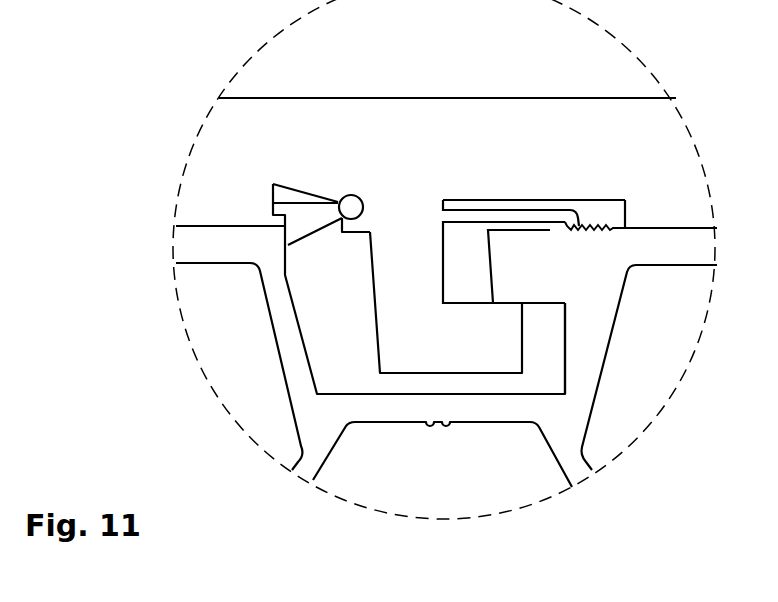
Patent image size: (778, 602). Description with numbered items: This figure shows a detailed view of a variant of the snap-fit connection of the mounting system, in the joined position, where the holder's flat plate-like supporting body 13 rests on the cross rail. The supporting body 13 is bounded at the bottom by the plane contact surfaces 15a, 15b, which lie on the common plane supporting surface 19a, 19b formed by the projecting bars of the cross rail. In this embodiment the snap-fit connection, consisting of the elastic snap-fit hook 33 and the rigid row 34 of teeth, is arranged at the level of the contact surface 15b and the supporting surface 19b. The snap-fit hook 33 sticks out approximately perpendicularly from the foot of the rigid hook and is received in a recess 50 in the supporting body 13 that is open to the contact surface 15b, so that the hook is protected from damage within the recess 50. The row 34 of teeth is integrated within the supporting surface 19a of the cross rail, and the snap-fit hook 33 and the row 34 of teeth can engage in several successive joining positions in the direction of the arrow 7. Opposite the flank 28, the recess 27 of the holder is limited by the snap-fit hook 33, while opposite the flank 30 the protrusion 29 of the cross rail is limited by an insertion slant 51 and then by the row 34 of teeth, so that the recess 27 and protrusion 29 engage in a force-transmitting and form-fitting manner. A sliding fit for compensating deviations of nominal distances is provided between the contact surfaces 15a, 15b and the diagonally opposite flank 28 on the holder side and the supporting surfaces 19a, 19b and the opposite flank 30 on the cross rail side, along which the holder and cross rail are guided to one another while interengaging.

The supporting body 13 is at (405, 125).
The supporting surface 19a is at (195, 224).
The supporting surface 19b is at (666, 224).
The contact surface 15a is at (224, 231).
The contact surface 15b is at (686, 235).
The snap-fit hook 33 is at (472, 210).
The recess 50 is at (535, 203).
The row of teeth 34 is at (603, 228).
The recess 27 is at (471, 278).
The protrusion 29 is at (535, 278).
The insertion slant 51 is at (550, 231).
The flank 28 is at (475, 303).
The flank 30 is at (537, 310).
The arrow 7 is at (488, 483).